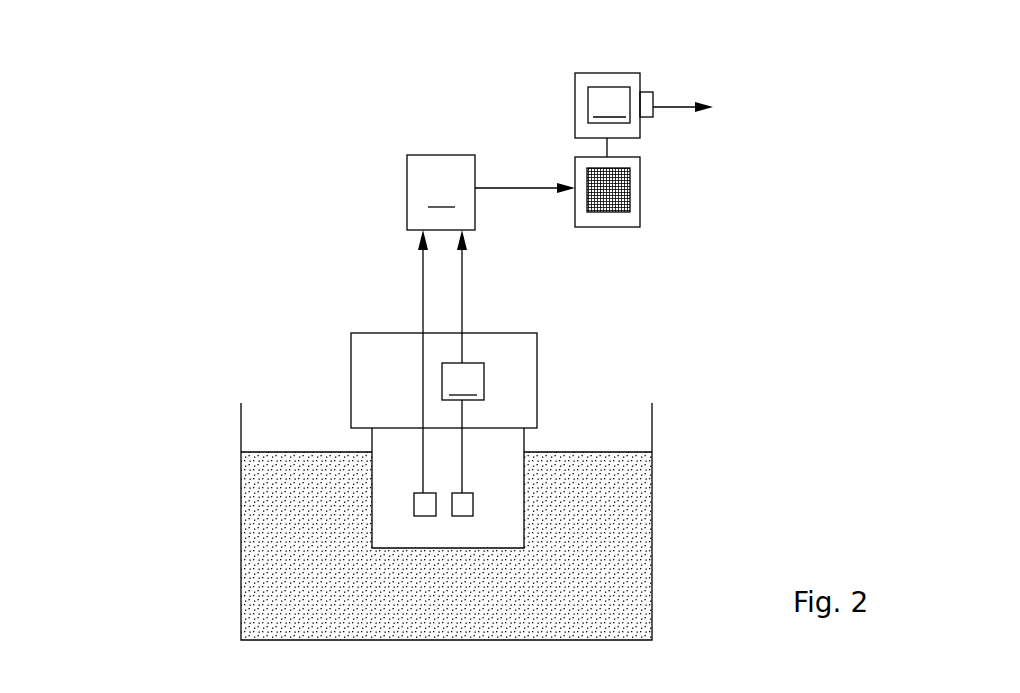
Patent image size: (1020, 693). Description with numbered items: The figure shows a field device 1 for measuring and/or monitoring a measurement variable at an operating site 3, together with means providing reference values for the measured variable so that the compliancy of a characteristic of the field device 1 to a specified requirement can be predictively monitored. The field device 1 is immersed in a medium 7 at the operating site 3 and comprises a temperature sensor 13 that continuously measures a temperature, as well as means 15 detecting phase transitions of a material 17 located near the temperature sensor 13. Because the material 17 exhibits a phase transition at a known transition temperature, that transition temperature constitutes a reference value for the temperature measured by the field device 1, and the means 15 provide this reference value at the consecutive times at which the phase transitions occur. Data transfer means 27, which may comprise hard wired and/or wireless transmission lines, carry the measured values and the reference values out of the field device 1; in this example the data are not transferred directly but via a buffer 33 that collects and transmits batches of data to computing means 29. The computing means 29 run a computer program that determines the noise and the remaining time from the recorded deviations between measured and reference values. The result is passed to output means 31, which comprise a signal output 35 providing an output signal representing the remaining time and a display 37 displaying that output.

The field device 1 is at (301, 343).
The operating site 3 is at (205, 426).
The liquid 7 is at (288, 586).
The temperature sensor 13 is at (415, 498).
The means detecting phase transitions 15 is at (463, 381).
The material 17 is at (458, 508).
The data transfer means 27 is at (527, 187).
The computing means 29 is at (642, 190).
The output means 31 is at (556, 93).
The buffer 33 is at (441, 192).
The signal output 35 is at (643, 107).
The display 37 is at (603, 87).